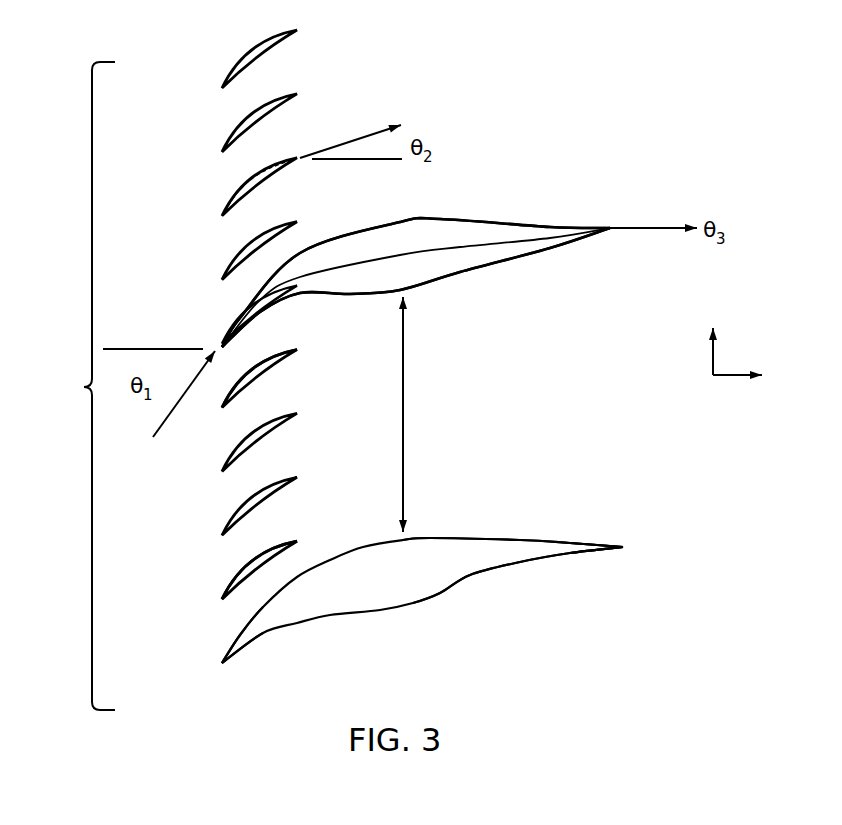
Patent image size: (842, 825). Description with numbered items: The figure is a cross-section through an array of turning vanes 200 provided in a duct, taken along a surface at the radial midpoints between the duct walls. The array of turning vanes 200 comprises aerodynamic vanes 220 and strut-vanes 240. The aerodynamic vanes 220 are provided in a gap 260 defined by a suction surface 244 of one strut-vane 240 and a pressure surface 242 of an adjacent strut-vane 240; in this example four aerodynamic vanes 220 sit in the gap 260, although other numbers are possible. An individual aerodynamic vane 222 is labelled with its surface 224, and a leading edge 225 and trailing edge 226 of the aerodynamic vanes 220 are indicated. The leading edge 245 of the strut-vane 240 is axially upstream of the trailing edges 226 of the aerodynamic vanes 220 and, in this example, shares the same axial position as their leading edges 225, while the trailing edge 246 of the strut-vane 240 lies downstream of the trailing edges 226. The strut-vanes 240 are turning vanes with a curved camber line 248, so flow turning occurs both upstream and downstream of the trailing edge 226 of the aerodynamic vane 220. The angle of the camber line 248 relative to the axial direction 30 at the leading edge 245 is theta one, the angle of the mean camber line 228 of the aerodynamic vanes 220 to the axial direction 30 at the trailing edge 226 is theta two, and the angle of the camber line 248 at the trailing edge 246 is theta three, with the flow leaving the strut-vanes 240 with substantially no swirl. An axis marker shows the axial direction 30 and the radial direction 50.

The array of turning vanes 200 is at (67, 386).
The aerodynamic vanes 220 is at (231, 70).
The airfoil 222 is at (269, 364).
The airfoil suction side 224 is at (259, 362).
The leading edges of the aerodynamic vanes 225 is at (222, 597).
The trailing edges of the aerodynamic vanes 226 is at (296, 541).
The mean camber line of the aerodynamic vanes 228 is at (263, 166).
The strut-vane 240 is at (497, 229).
The pressure surface 242 is at (470, 265).
The suction surface 244 is at (457, 218).
The leading edge of the strut-vane 245 is at (225, 665).
The trailing edge of the strut-vane 246 is at (615, 547).
The camber line of the strut-vane 248 is at (388, 256).
The gap 260 is at (403, 414).
The radial direction 50 is at (714, 338).
The axial direction 30 is at (743, 391).